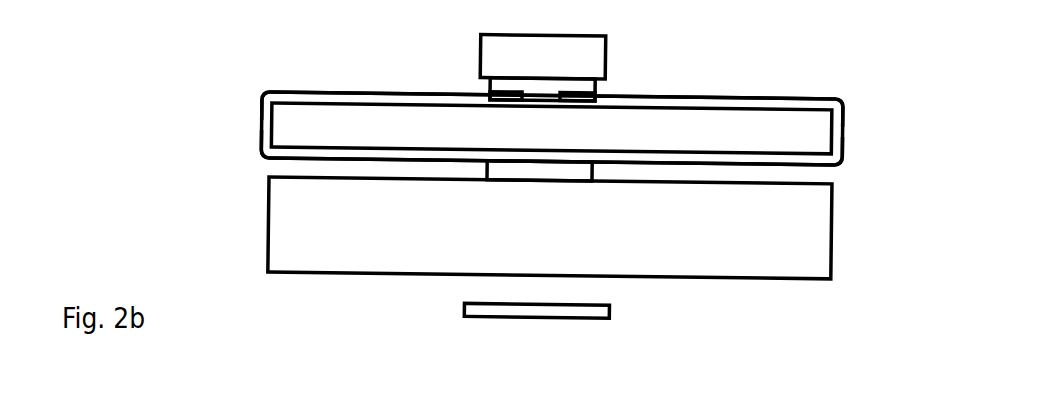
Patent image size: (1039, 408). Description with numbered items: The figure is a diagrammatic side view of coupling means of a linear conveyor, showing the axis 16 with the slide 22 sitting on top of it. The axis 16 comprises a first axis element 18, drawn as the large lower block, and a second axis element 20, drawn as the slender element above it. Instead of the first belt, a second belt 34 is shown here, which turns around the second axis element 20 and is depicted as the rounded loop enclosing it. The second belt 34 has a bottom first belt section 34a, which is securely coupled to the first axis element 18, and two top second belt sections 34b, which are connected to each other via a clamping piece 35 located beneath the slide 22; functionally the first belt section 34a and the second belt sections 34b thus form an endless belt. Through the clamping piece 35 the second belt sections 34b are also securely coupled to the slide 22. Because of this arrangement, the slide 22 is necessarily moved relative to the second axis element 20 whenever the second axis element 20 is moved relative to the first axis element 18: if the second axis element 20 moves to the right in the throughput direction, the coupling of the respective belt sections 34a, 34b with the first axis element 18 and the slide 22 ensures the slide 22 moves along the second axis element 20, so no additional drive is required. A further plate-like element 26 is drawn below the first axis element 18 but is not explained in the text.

The axis 16 is at (897, 223).
The first axis element 18 is at (556, 242).
The second axis element 20 is at (807, 130).
The slide 22 is at (587, 58).
The magnet 26 is at (612, 305).
The second belt 34 is at (843, 145).
The first belt section 34a is at (343, 160).
The second belt sections 34b is at (312, 90).
The clamping piece 35 is at (490, 92).